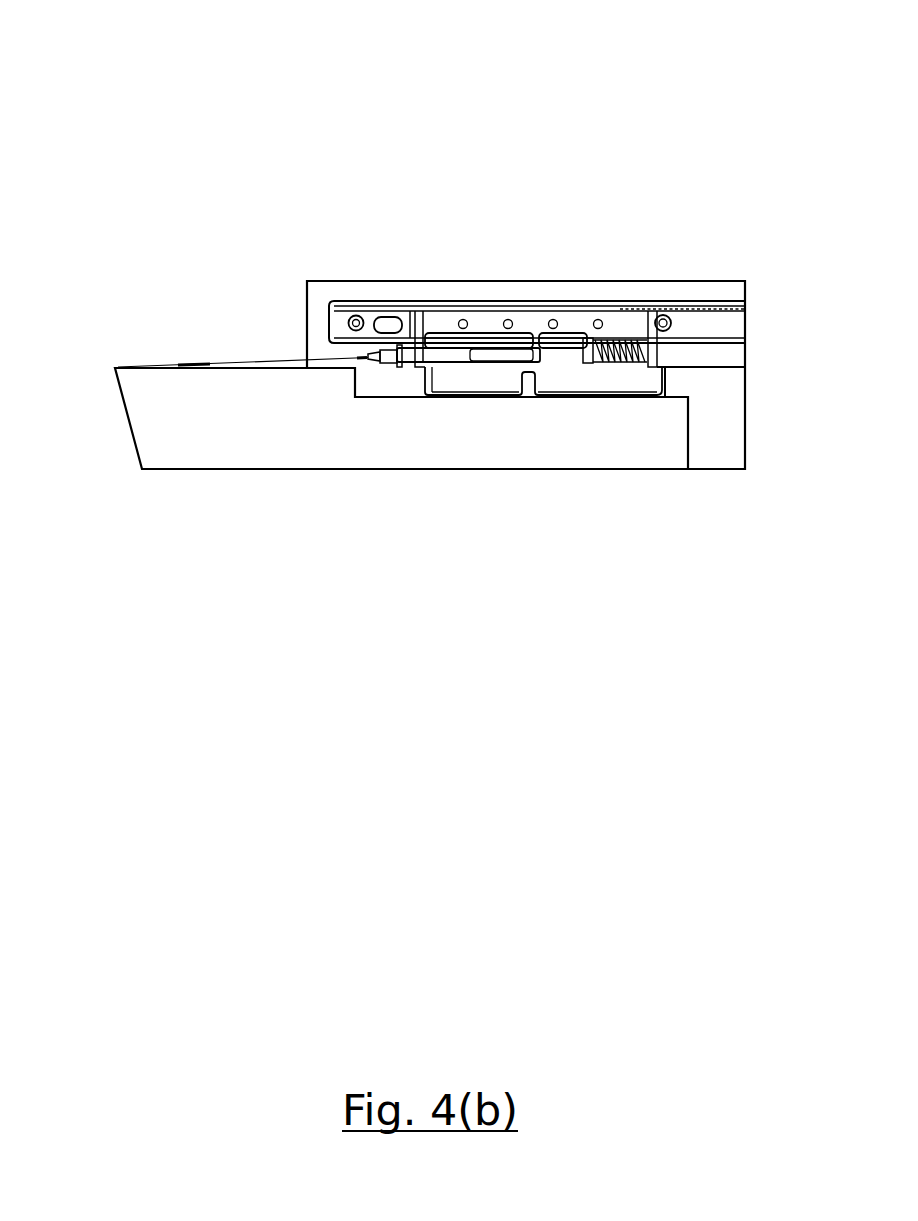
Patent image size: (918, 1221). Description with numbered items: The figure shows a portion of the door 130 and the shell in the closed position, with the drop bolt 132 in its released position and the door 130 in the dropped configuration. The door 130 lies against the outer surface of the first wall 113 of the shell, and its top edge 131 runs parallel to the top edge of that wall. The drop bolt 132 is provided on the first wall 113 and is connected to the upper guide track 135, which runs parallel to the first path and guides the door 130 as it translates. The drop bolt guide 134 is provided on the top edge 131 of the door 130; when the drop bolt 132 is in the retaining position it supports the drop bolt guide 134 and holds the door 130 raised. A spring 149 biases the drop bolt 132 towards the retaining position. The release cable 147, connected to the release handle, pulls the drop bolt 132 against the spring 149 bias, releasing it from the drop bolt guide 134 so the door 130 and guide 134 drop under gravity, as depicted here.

The first wall 113 is at (325, 288).
The door 130 is at (277, 413).
The top edge 131 is at (393, 296).
The drop bolt 132 is at (483, 355).
The drop bolt guide 134 is at (626, 395).
The upper guide track 135 is at (715, 327).
The cable 147 is at (185, 362).
The spring 149 is at (601, 345).